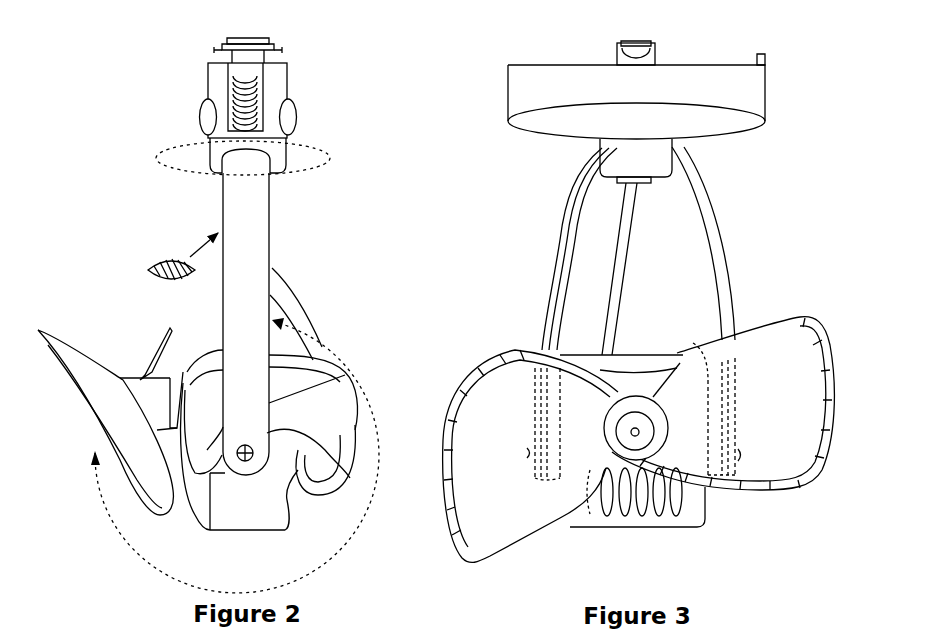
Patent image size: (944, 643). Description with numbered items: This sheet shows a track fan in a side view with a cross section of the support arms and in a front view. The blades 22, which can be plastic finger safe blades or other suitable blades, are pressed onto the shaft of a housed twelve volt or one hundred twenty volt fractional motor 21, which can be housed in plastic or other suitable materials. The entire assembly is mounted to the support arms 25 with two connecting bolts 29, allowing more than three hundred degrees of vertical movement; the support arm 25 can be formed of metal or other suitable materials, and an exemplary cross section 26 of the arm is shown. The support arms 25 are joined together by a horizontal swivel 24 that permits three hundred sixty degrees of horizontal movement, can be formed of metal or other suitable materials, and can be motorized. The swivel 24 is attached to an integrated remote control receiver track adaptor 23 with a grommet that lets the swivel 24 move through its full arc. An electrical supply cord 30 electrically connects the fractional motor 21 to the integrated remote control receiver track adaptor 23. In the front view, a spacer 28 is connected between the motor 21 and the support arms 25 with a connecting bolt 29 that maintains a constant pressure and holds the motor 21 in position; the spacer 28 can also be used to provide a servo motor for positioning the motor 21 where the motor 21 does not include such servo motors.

In FIG. 2, the fractional motor 21 is at (245, 536).
In FIG. 3, the fractional motor 21 is at (636, 534).
In FIG. 2, the blades 22 is at (92, 428).
In FIG. 3, the blades 22 is at (827, 345).
In FIG. 2, the integrated remote control receiver track adaptor 23 is at (292, 95).
In FIG. 3, the integrated remote control receiver track adaptor 23 is at (506, 95).
In FIG. 2, the 360° horizontal swivel 24 is at (289, 158).
In FIG. 3, the 360° horizontal swivel 24 is at (588, 158).
In FIG. 2, the support arms 25 is at (284, 217).
In FIG. 3, the support arms 25 is at (555, 218).
In FIG. 2, the cross section 26 is at (145, 270).
In FIG. 3, the spacer 28 is at (553, 488).
In FIG. 2, the connecting bolt 29 is at (257, 453).
In FIG. 3, the connecting bolt 29 is at (430, 453).
In FIG. 2, the electrical supply cord 30 is at (284, 278).
In FIG. 3, the electrical supply cord 30 is at (605, 280).